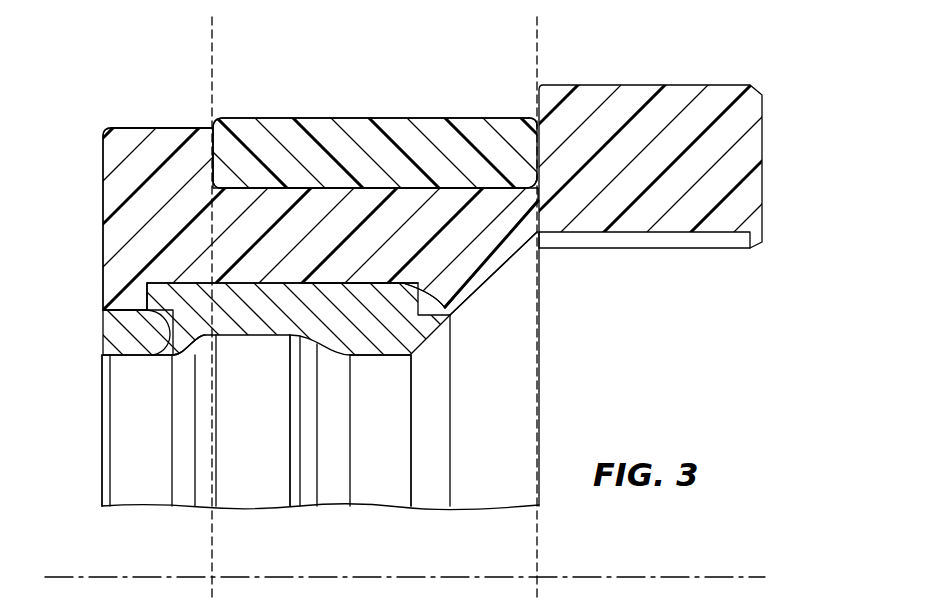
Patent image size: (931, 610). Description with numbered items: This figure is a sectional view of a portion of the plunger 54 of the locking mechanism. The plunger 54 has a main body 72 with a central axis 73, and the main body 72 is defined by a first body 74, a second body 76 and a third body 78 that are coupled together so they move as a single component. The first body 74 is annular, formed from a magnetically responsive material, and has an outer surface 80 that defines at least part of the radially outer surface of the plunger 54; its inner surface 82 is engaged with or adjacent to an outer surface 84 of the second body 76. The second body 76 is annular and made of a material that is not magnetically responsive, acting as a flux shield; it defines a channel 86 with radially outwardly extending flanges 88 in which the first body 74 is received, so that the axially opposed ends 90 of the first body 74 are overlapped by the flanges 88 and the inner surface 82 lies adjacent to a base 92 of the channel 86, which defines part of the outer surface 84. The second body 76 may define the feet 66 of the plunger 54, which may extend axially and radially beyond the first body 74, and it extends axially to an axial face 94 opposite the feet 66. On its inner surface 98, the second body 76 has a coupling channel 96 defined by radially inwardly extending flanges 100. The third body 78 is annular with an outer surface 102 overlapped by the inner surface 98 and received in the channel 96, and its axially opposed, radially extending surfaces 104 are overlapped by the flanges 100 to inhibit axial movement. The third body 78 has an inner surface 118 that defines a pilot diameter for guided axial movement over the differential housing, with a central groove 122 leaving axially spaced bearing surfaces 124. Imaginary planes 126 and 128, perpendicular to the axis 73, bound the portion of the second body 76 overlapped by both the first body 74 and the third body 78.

The plunger 54 is at (727, 50).
The feet 66 is at (745, 147).
The main body 72 is at (552, 363).
The central axis 73 is at (720, 577).
The first body 74 is at (357, 147).
The second body 76 is at (134, 177).
The third body 78 is at (118, 330).
The outer surface 80 is at (420, 119).
The inner surface 82 is at (430, 188).
The outer surface 84 is at (140, 128).
The channel 86 is at (238, 165).
The flanges 88 is at (228, 140).
The ends 90 is at (211, 172).
The base 92 is at (465, 250).
The axial face 94 is at (102, 260).
The channel 96 is at (390, 295).
The inner surface 98 is at (122, 298).
The flanges 100 is at (153, 355).
The outer surface 102 is at (366, 282).
The radially extending surfaces 104 is at (140, 312).
The inner surface 118 is at (291, 340).
The groove 122 is at (221, 346).
The bearing surfaces 124 is at (131, 487).
The imaginary plane 126 is at (213, 17).
The imaginary plane 128 is at (539, 23).